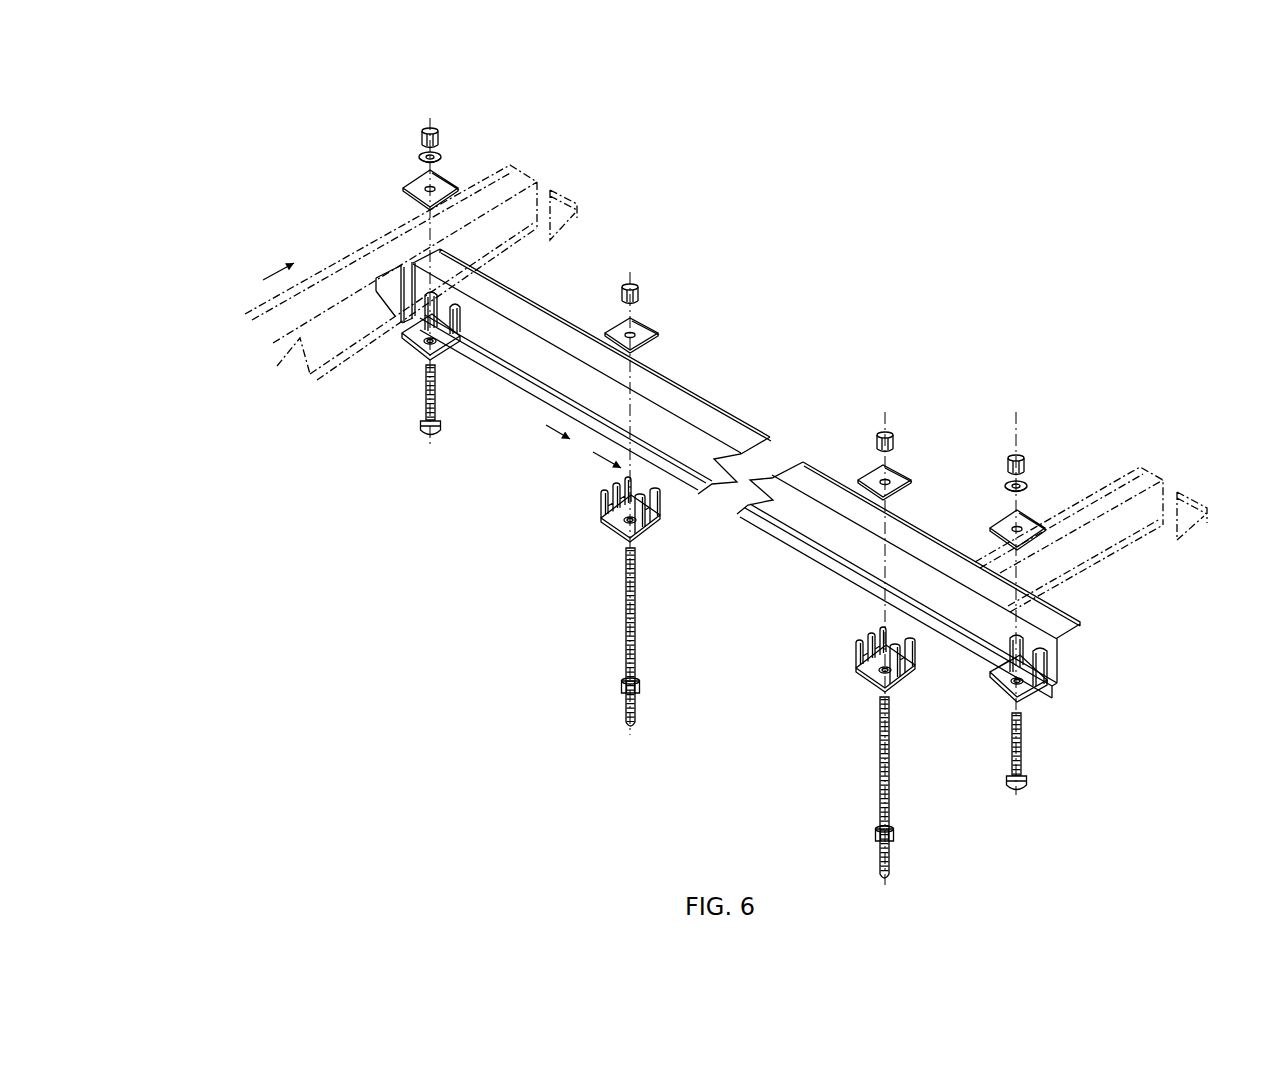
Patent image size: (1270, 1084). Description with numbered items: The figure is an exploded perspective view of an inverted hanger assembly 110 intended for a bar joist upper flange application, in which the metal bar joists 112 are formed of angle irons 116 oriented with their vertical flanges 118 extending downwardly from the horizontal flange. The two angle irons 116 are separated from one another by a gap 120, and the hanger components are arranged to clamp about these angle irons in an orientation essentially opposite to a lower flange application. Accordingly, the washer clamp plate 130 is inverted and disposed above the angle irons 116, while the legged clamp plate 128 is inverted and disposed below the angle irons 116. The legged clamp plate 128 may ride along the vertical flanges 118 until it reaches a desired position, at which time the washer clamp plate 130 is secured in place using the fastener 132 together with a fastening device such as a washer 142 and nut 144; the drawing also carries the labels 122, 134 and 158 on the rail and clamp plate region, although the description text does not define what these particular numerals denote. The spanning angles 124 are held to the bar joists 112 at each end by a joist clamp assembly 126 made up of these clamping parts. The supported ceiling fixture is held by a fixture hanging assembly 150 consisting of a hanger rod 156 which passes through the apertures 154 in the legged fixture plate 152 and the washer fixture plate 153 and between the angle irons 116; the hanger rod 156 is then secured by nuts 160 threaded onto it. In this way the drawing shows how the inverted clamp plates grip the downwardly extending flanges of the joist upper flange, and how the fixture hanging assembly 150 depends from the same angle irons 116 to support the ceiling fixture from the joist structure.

The inverted hanger assembly 110 is at (717, 628).
The metal bar joist 112 is at (543, 162).
The angle iron 116 is at (907, 567).
The vertical flange 118 is at (514, 392).
The gap 120 is at (680, 483).
The first rail section 122 is at (388, 292).
The spanning angle 124 is at (405, 268).
The joist clamp assembly 126 is at (334, 393).
The legged clamp plate 128 is at (703, 476).
The washer clamp plate 130 is at (446, 183).
The fastener 132 is at (424, 428).
The bracket aperture 134 is at (417, 346).
The washer 142 is at (441, 156).
The nut 144 is at (422, 130).
The fixture hanging assembly 150 is at (592, 572).
The legged fixture plate 152 is at (603, 526).
The washer fixture plate 153 is at (648, 331).
The aperture 154 is at (607, 330).
The hanger rod 156 is at (640, 712).
The rail lip 158 is at (539, 394).
The nut 160 is at (636, 284).